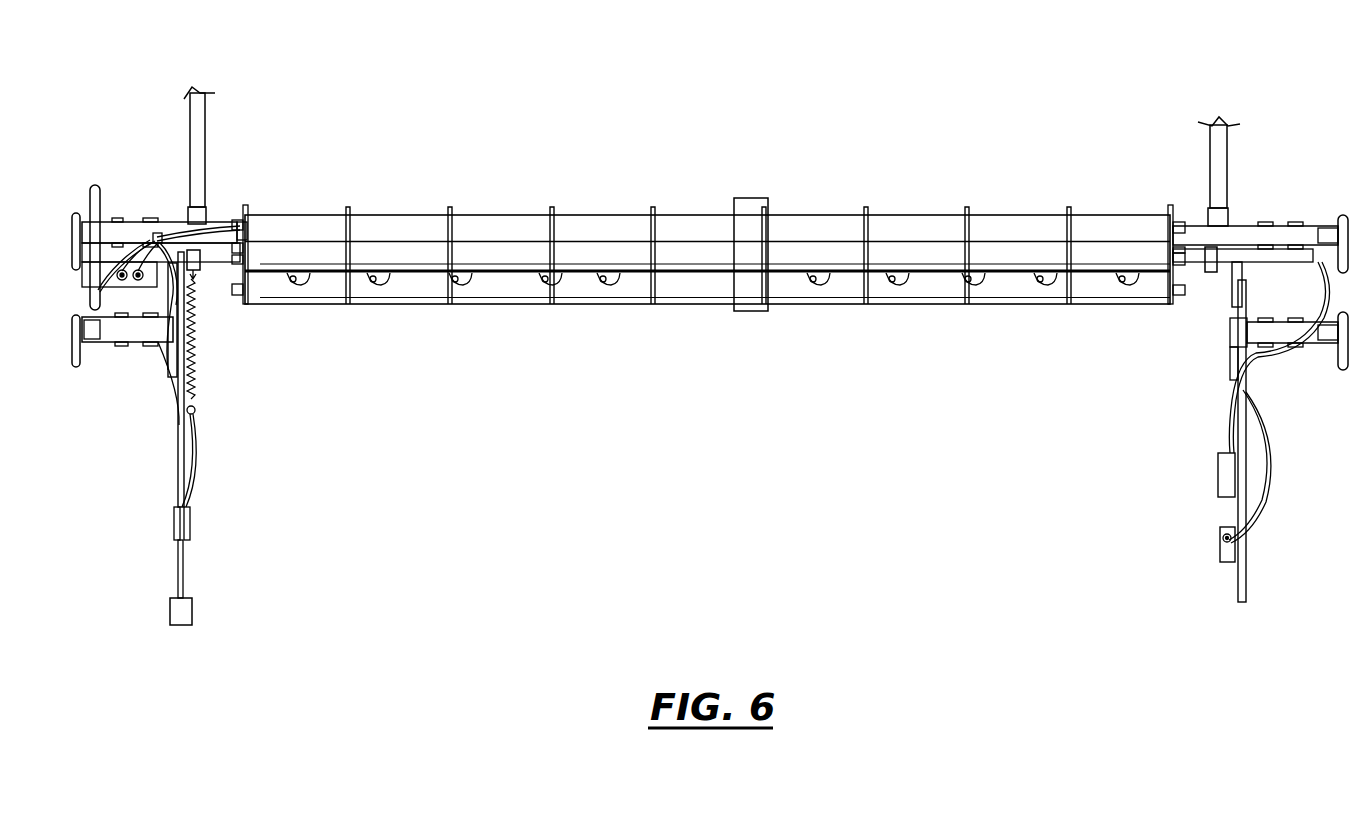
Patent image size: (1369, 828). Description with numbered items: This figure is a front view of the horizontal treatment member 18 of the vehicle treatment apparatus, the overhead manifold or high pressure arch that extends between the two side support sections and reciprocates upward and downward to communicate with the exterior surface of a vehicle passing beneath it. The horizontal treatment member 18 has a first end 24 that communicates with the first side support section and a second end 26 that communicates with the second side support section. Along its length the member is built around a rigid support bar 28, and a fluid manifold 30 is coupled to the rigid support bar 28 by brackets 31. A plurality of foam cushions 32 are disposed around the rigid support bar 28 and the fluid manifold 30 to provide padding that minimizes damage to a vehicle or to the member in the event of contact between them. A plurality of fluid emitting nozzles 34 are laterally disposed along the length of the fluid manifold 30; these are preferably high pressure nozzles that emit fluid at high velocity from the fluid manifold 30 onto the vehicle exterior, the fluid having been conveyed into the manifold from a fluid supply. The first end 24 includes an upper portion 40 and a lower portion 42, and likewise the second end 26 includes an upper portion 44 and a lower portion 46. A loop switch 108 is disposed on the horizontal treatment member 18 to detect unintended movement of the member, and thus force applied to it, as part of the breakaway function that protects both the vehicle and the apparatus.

The horizontal treatment member 18 is at (733, 122).
The first end 24 is at (82, 184).
The second end 26 is at (1322, 192).
The rigid support bar 28 is at (205, 227).
The fluid manifold 30 is at (222, 257).
The brackets 31 is at (193, 252).
The foam cushions 32 is at (368, 252).
The fluid emitting nozzles 34 is at (460, 277).
The upper portion 40 is at (75, 237).
The lower portion 42 is at (70, 330).
The upper portion 44 is at (1346, 232).
The lower portion 46 is at (1346, 345).
The loop switch 108 is at (748, 313).